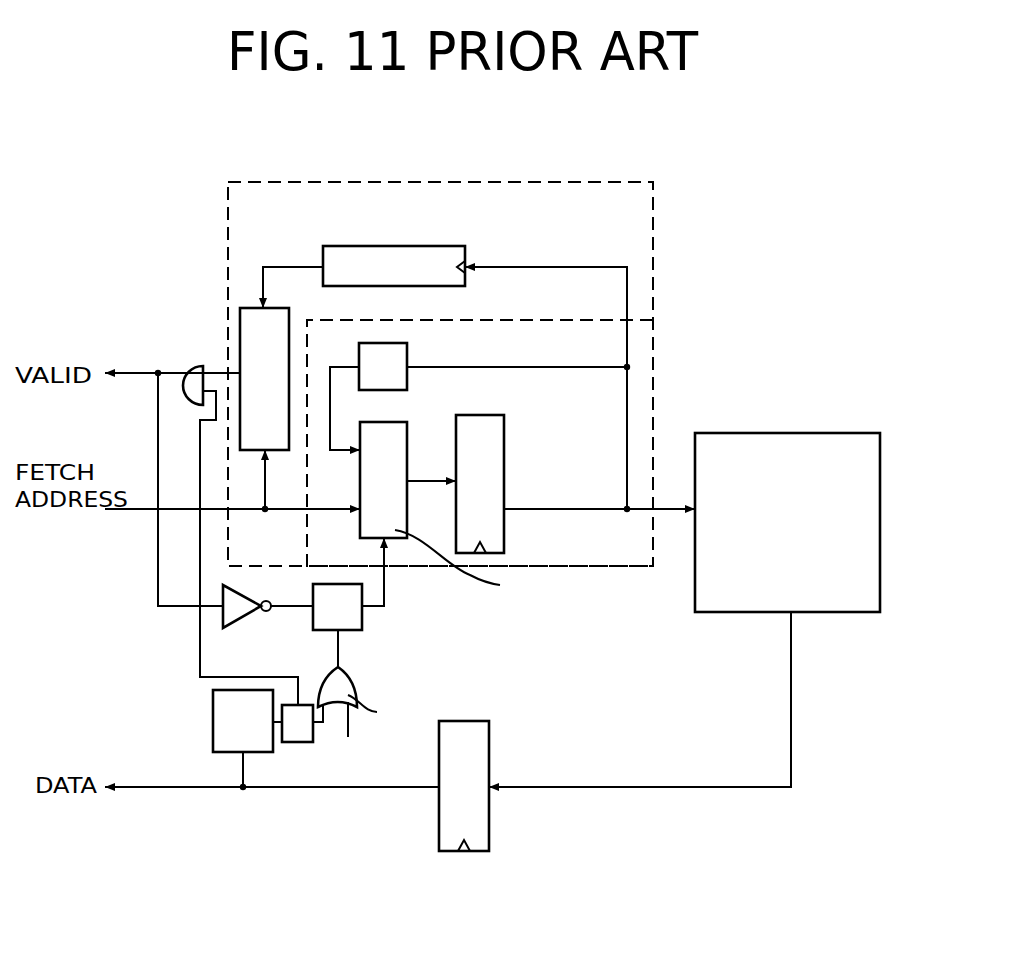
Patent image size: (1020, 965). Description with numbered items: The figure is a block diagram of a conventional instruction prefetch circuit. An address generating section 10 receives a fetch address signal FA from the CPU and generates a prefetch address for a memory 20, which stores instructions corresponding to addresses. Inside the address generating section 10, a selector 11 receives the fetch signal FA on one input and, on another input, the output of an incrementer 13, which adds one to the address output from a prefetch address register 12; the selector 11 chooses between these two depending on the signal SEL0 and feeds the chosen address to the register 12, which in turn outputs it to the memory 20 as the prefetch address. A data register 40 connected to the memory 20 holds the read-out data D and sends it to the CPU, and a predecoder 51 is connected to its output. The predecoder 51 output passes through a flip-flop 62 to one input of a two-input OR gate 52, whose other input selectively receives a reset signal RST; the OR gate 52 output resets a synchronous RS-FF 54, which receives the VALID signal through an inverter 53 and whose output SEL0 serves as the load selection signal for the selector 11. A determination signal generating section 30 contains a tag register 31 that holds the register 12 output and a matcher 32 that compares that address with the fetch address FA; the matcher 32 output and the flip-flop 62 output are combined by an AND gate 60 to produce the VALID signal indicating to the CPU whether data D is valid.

The address generating section 10 is at (653, 345).
The selector 11 is at (407, 440).
The prefetch address register 12 is at (506, 422).
The incrementer 13 is at (408, 355).
The memory 20 is at (795, 433).
The determination signal generating section 30 is at (653, 206).
The tag register 31 is at (448, 244).
The matcher 32 is at (290, 337).
The data register 40 is at (489, 735).
The predecoder 51 is at (213, 717).
The two-input OR gate 52 is at (355, 685).
The inverter 53 is at (223, 620).
The synchronous RS-FF 54 is at (313, 622).
The AND gate 60 is at (201, 365).
The flip-flop 62 is at (297, 732).